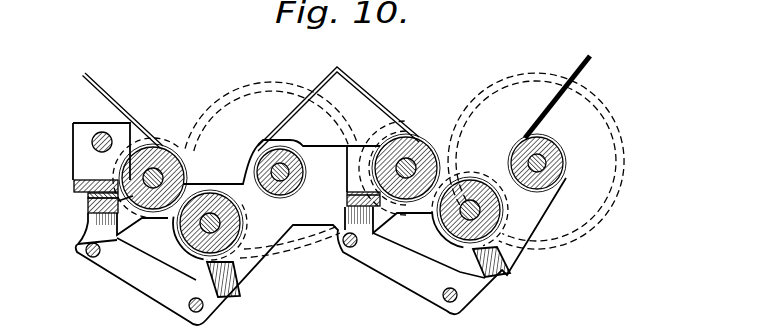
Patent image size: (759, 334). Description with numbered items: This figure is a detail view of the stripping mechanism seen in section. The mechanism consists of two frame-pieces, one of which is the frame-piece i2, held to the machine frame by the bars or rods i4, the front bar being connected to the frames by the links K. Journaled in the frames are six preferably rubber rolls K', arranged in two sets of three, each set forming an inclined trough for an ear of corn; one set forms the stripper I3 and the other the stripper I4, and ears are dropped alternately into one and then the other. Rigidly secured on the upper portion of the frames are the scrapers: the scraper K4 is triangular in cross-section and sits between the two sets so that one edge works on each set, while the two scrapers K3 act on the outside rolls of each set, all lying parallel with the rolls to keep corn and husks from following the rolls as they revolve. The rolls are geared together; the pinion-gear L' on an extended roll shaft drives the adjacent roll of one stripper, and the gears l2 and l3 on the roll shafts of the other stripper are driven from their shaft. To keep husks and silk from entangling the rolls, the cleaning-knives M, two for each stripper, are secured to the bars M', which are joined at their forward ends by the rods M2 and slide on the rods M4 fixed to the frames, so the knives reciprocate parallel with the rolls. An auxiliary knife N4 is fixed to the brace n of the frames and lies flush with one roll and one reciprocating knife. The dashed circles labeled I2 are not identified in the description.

The links K is at (355, 173).
The rolls K' is at (323, 201).
The scrapers K3 is at (128, 88).
The scraper K4 is at (392, 108).
The cleaning-knives M is at (301, 224).
The bars M' is at (305, 242).
The rods M2 is at (405, 276).
The rods M4 is at (88, 254).
The auxiliary knife N4 is at (92, 190).
The brace n is at (130, 137).
The bars or rods i4 is at (100, 132).
The frame-piece i2 is at (510, 210).
The roller path circle I2 is at (622, 127).
The stripper I3 is at (419, 139).
The stripper I4 is at (180, 199).
The gear l2 is at (173, 132).
The gear l3 is at (268, 83).
The pinion-gear L' is at (436, 120).